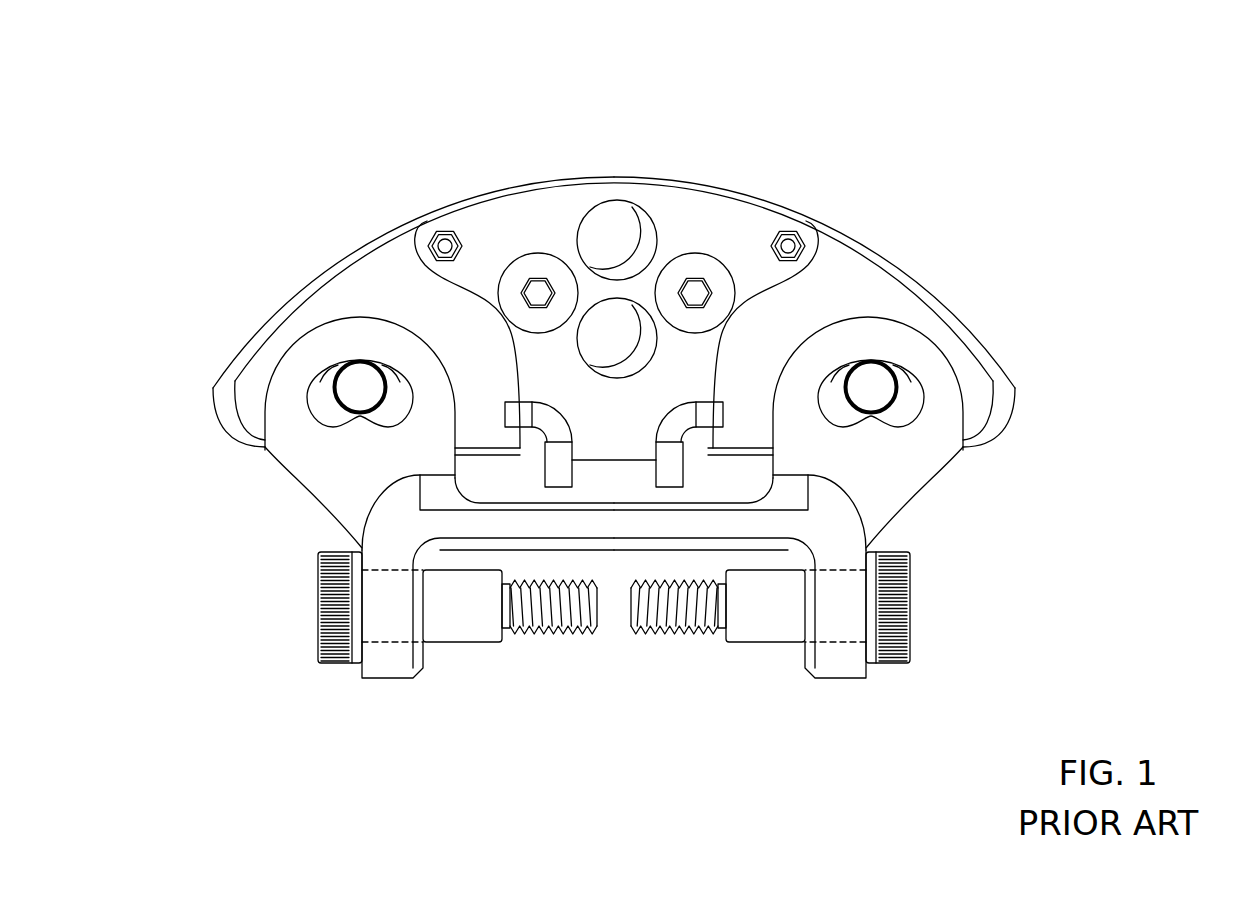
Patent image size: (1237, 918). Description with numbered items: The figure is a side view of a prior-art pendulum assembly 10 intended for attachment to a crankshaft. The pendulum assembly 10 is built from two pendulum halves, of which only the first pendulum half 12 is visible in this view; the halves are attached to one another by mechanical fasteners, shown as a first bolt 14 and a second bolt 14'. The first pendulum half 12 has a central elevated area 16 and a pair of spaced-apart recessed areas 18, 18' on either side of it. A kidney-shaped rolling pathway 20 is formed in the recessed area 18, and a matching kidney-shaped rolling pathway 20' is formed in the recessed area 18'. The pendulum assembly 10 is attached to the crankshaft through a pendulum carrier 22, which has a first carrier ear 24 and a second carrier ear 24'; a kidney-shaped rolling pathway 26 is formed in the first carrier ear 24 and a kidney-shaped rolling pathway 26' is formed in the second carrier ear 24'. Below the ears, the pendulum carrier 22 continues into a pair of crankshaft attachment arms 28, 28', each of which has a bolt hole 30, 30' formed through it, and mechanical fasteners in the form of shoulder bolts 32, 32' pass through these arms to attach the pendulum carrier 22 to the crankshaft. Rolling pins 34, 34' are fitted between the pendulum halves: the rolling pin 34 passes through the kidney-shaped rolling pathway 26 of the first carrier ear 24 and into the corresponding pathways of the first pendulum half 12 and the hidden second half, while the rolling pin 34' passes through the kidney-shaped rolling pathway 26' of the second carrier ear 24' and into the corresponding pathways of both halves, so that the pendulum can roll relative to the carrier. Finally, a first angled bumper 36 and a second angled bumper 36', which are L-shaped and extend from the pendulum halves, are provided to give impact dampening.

The pendulum assembly 10 is at (963, 192).
The first pendulum half 12 is at (838, 283).
The first bolt 14 is at (529, 201).
The second bolt 14' is at (712, 214).
The elevated area 16 is at (560, 208).
The recessed area 18 is at (413, 331).
The recessed area 18' is at (832, 362).
The kidney-shaped rolling pathway 20 is at (301, 397).
The kidney-shaped rolling pathway 20' is at (886, 438).
The pendulum carrier 22 is at (340, 492).
The first carrier ear 24 is at (250, 456).
The second carrier ear 24' is at (1032, 414).
The kidney-shaped rolling pathway 26 is at (291, 326).
The kidney-shaped rolling pathway 26' is at (968, 489).
The crankshaft attachment arm 28 is at (402, 686).
The crankshaft attachment arm 28' is at (837, 672).
The bolt hole 30 is at (354, 679).
The bolt hole 30' is at (919, 630).
The shoulder bolt 32 is at (479, 642).
The shoulder bolt 32' is at (748, 642).
The rolling pin 34 is at (296, 263).
The rolling pin 34' is at (1004, 323).
The first angled bumper 36 is at (554, 556).
The second angled bumper 36' is at (673, 556).